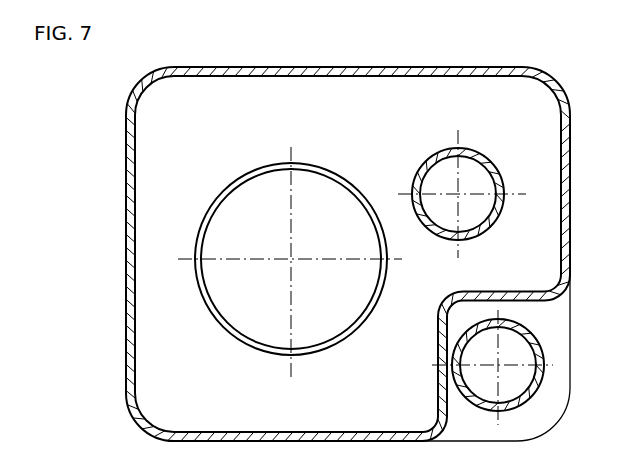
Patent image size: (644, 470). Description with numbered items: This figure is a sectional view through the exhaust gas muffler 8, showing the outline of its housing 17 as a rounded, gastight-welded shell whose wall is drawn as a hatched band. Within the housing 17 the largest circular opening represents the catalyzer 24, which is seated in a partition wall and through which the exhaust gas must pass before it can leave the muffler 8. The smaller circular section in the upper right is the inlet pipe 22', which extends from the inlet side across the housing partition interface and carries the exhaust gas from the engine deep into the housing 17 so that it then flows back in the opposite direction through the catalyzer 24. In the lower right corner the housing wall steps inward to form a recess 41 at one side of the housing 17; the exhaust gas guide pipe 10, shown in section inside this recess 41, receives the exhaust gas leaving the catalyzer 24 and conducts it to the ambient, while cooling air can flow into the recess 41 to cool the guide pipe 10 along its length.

The exhaust gas muffler 8 is at (326, 255).
The housing 17 is at (126, 271).
The catalyzer 24 is at (241, 180).
The inlet pipe 22' is at (462, 193).
The recess 41 is at (516, 357).
The guide pipe 10 is at (543, 350).